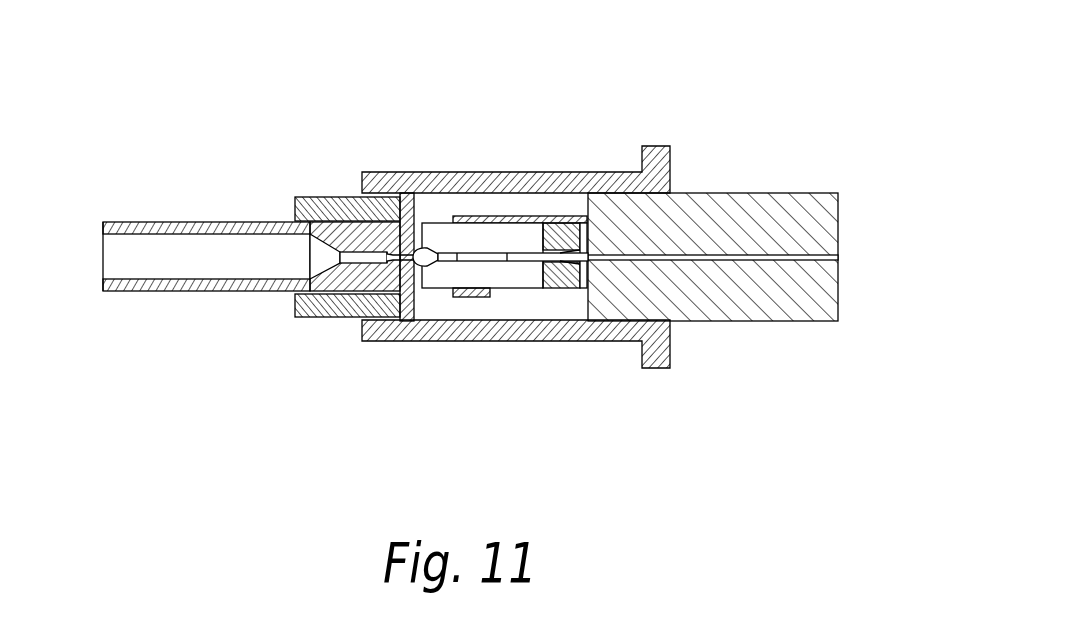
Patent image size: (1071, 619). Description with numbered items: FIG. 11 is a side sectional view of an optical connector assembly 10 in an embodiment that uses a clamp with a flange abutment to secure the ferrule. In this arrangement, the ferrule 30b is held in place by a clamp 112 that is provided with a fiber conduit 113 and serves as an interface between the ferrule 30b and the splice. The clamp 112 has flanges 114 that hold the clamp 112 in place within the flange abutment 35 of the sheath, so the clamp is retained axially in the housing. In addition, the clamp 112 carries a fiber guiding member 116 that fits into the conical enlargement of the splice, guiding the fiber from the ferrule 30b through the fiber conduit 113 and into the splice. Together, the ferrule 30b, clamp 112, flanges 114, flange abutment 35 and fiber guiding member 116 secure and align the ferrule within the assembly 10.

The connector assembly 10 is at (753, 142).
The ferrule 30b is at (165, 291).
The flange abutment 35 is at (377, 335).
The clamp 112 is at (310, 300).
The fiber conduit 113 is at (413, 253).
The flanges 114 is at (403, 317).
The fiber guiding member 116 is at (426, 248).